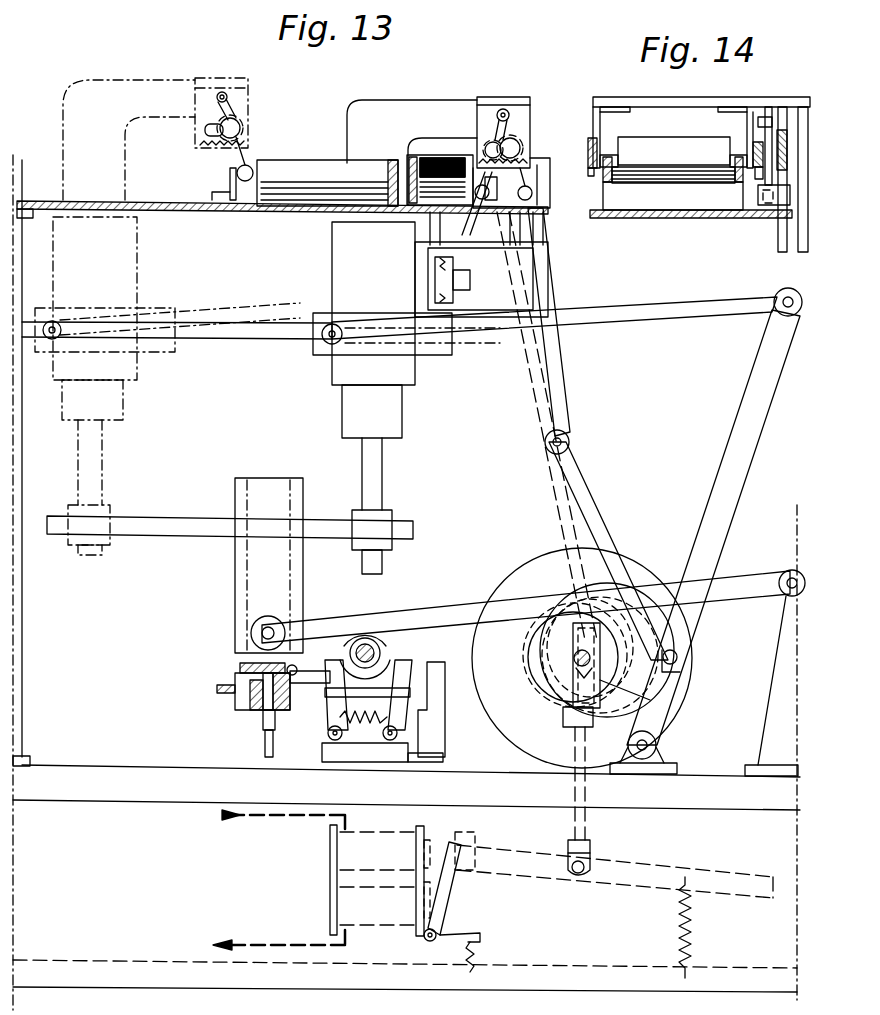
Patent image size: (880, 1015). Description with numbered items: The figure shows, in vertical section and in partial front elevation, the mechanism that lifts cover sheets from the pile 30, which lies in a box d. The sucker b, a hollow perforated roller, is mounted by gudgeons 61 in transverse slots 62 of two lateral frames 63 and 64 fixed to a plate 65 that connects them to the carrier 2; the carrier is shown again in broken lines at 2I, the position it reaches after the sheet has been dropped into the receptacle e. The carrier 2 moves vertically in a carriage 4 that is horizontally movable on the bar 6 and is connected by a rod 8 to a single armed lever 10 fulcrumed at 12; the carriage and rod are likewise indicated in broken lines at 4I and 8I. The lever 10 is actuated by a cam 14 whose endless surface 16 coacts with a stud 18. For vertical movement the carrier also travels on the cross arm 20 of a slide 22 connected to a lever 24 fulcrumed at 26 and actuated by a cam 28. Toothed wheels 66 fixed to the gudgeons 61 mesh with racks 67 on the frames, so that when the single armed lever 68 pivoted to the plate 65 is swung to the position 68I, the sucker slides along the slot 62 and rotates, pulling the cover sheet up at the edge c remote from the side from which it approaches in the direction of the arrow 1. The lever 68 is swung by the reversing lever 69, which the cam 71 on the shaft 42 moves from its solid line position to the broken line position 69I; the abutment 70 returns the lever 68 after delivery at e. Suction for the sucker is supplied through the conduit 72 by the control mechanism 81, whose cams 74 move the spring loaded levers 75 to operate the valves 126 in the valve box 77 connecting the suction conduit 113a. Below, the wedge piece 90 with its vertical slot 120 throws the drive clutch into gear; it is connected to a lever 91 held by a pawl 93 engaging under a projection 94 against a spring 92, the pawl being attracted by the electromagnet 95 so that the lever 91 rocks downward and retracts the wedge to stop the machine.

In FIG. 13, the arrow 1 is at (298, 96).
In FIG. 13, the carrier 2 is at (347, 130).
In FIG. 14, the carrier 2 is at (780, 230).
In FIG. 13, the broken-line position of carrier 2I is at (75, 138).
In FIG. 13, the carriage 4 is at (382, 398).
In FIG. 13, the second column 4I is at (125, 268).
In FIG. 13, the bar 6 is at (245, 340).
In FIG. 13, the rod 8 is at (692, 310).
In FIG. 13, the second arm 8I is at (243, 312).
In FIG. 13, the single armed lever 10 is at (742, 422).
In FIG. 13, the fulcrum 12 is at (658, 746).
In FIG. 13, the cam 14 is at (492, 700).
In FIG. 13, the endless cam surface 16 is at (548, 723).
In FIG. 13, the stud 18 is at (678, 660).
In FIG. 13, the cross arm 20 is at (165, 520).
In FIG. 13, the vertically movable slide 22 is at (265, 563).
In FIG. 13, the single armed lever 24 is at (456, 612).
In FIG. 13, the fulcrum 26 is at (785, 572).
In FIG. 13, the cam 28 is at (593, 731).
In FIG. 13, the pile 30 is at (433, 158).
In FIG. 13, the shaft 42 is at (574, 658).
In FIG. 14, the gudgeon 61 is at (607, 152).
In FIG. 13, the transverse slot 62 is at (205, 130).
In FIG. 13, the lateral frame 63 is at (245, 115).
In FIG. 14, the lateral frame 63 is at (596, 124).
In FIG. 14, the lateral frame 64 is at (750, 126).
In FIG. 13, the plate 65 is at (218, 80).
In FIG. 14, the plate 65 is at (688, 104).
In FIG. 13, the toothed wheel 66 is at (242, 132).
In FIG. 14, the toothed wheel 66 is at (787, 142).
In FIG. 13, the rack 67 is at (200, 148).
In FIG. 14, the rack 67 is at (757, 173).
In FIG. 13, the single armed lever 68 is at (515, 184).
In FIG. 14, the single armed lever 68 is at (772, 190).
In FIG. 13, the shifted position of lever 68I is at (492, 150).
In FIG. 13, the reversing lever 69 is at (552, 288).
In FIG. 14, the reversing lever 69 is at (803, 232).
In FIG. 13, the broken-line position of reversing lever 69I is at (538, 370).
In FIG. 13, the abutment 70 is at (230, 180).
In FIG. 13, the cam 71 is at (560, 612).
In FIG. 13, the suction conduit 72 is at (262, 740).
In FIG. 13, the cam 74 is at (345, 640).
In FIG. 13, the spring loaded lever 75 is at (400, 650).
In FIG. 13, the valve box 77 is at (217, 690).
In FIG. 13, the control mechanism 81 is at (402, 752).
In FIG. 13, the wedge piece 90 is at (566, 680).
In FIG. 13, the lever 91 is at (716, 875).
In FIG. 13, the spring 92 is at (692, 934).
In FIG. 13, the pawl 93 is at (445, 906).
In FIG. 13, the projection 94 is at (450, 846).
In FIG. 13, the electromagnet 95 is at (338, 865).
In FIG. 13, the suction conduit 113a is at (245, 695).
In FIG. 13, the vertical slot 120 is at (612, 686).
In FIG. 13, the valve 126 is at (240, 666).
In FIG. 14, the sucker b is at (691, 177).
In FIG. 13, the edge c is at (545, 165).
In FIG. 13, the magazine d is at (350, 186).
In FIG. 13, the receptacle e is at (327, 183).